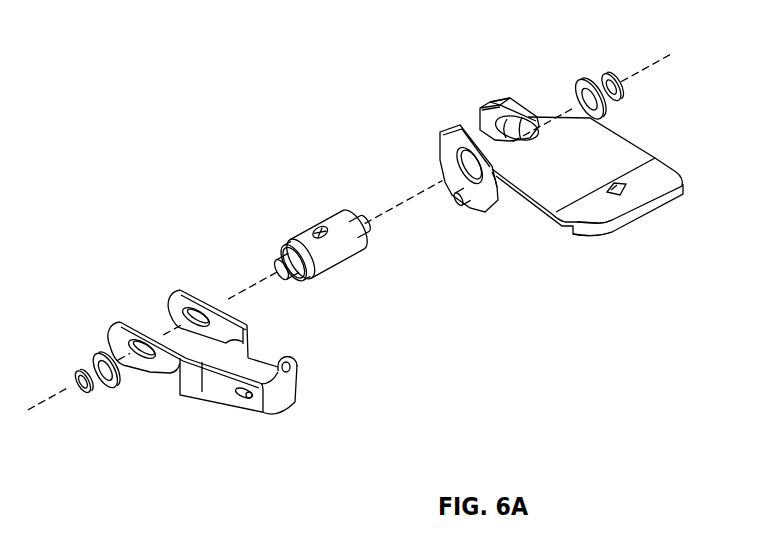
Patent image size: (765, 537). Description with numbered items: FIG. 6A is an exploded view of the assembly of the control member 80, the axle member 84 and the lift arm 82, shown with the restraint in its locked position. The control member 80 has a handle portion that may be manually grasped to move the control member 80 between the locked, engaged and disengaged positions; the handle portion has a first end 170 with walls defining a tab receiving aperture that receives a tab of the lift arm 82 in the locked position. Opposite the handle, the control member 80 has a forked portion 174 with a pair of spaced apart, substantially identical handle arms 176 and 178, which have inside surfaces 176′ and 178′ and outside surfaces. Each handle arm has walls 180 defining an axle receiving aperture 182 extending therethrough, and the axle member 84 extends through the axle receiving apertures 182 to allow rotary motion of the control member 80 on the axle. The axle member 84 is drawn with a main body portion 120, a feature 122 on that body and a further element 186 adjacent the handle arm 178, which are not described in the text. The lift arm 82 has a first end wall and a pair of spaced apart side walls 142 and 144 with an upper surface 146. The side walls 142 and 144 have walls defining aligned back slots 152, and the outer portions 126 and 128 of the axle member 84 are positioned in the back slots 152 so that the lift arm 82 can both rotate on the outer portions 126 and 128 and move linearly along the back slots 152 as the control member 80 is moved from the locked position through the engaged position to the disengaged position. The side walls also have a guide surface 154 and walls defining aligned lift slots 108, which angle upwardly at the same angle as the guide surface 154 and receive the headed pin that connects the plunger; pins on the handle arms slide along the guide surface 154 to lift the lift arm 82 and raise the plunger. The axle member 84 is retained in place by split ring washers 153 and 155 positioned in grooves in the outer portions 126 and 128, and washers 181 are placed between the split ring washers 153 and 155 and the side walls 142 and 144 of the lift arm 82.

The control member 80 is at (538, 184).
The lift arm 82 is at (201, 369).
The axle member 84 is at (337, 227).
The lift slots 108 is at (288, 358).
The fastener body 120 is at (340, 266).
The set screw opening 122 is at (316, 231).
The outer portion of the axle member 126 is at (360, 225).
The outer portion of the axle member 128 is at (284, 276).
The side wall 142 is at (193, 387).
The side wall 144 is at (263, 340).
The upper surface 146 is at (191, 292).
The back slots 152 is at (182, 305).
The split ring washer 153 is at (89, 392).
The guide surface 154 is at (152, 372).
The split ring washer 155 is at (619, 89).
The first end of the handle portion 170 is at (596, 235).
The forked portion 174 is at (498, 103).
The handle arm 176 is at (474, 106).
The inside surface 176′ is at (517, 99).
The handle arm 178 is at (461, 174).
The inside surface 178′ is at (489, 207).
The walls defining axle receiving aperture 180 is at (466, 158).
The washer 181 is at (91, 356).
The axle receiving aperture 182 is at (468, 73).
The stud 186 is at (448, 187).